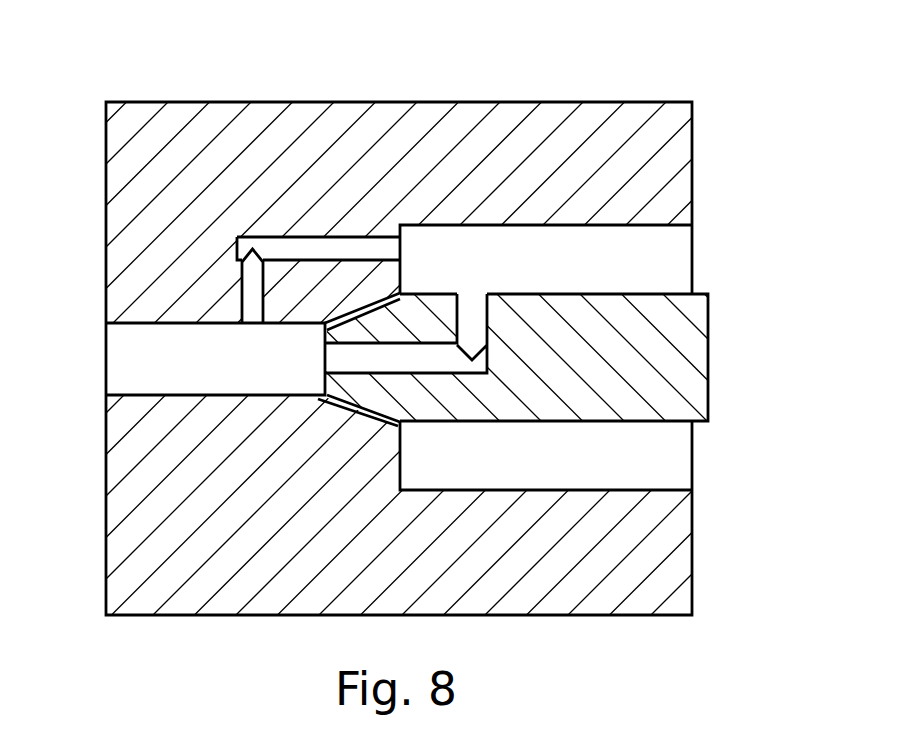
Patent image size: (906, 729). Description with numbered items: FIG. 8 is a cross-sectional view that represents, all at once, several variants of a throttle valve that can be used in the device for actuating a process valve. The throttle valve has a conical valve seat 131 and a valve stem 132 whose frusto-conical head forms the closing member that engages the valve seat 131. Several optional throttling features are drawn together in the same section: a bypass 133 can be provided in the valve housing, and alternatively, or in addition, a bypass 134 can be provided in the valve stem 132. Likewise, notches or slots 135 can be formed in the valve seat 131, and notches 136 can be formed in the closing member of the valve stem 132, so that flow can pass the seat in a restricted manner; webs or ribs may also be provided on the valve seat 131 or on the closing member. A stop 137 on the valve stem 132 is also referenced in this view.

The valve seat 131 is at (400, 424).
The valve stem 132 is at (652, 367).
The bypass in the valve housing 133 is at (285, 248).
The bypass in the valve member 134 is at (447, 353).
The notches in the valve seat 135 is at (325, 395).
The notches in the valve member 136 is at (372, 300).
The stop on the valve stem 137 is at (778, 716).